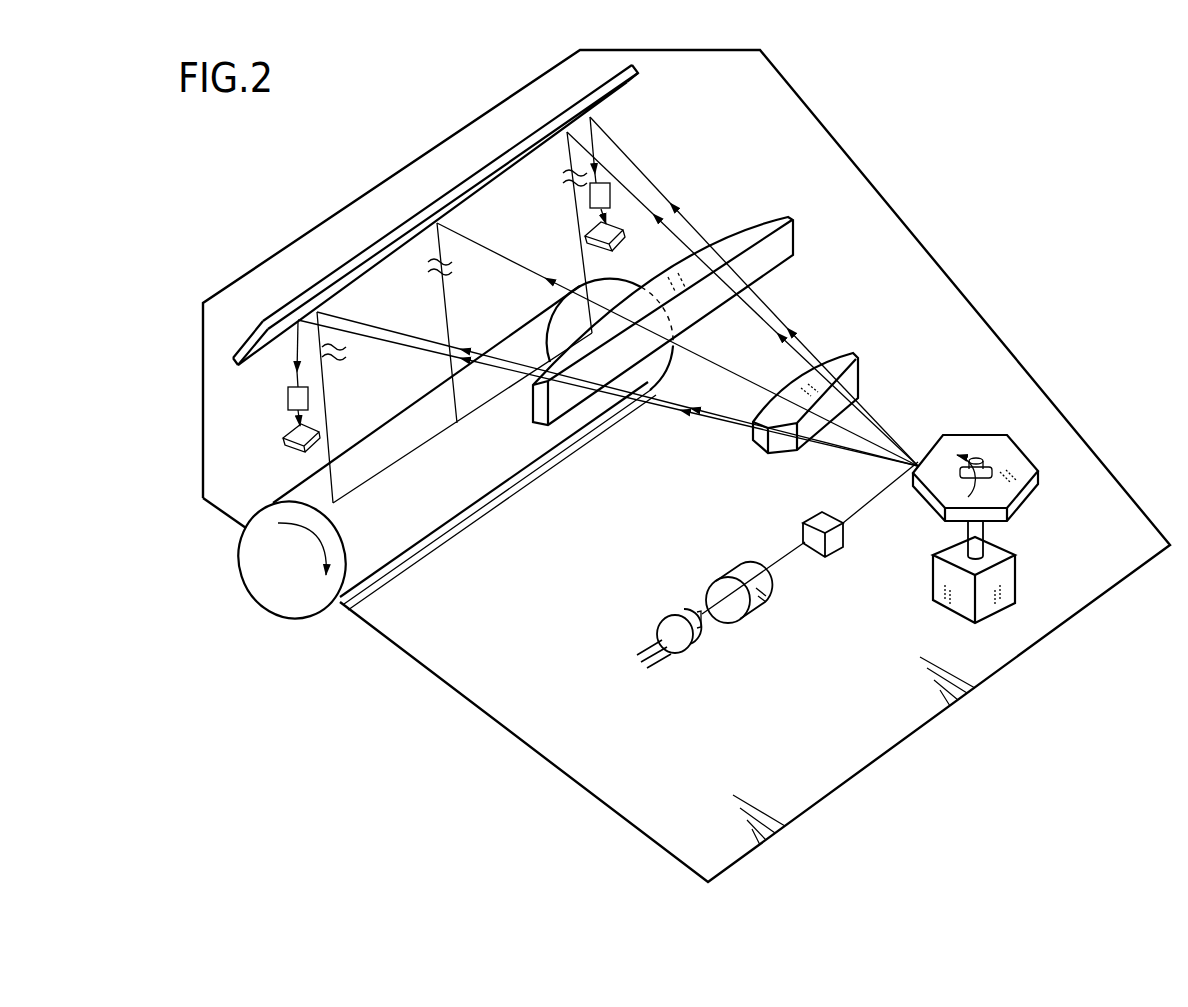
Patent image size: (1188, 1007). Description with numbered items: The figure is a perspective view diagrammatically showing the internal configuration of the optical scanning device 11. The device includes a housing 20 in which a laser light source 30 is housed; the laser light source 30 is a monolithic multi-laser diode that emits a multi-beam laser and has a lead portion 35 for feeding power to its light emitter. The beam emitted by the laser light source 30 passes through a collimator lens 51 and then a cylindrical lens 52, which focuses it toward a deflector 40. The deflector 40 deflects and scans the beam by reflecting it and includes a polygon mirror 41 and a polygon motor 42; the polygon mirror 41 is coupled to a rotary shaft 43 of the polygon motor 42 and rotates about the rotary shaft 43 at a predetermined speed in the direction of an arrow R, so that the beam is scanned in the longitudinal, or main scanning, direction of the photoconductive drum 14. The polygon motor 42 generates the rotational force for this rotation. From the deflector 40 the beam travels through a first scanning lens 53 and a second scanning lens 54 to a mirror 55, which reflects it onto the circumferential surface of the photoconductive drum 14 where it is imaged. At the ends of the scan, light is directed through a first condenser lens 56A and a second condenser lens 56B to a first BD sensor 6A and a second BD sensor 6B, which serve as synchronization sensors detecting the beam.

The optical scanning device 11 is at (1033, 203).
The housing 20 is at (998, 338).
The mirror 55 is at (472, 172).
The photoconductive drum 14 is at (400, 540).
The first condenser lens 56A is at (288, 398).
The first BD sensor 6A is at (283, 435).
The second condenser lens 56B is at (590, 197).
The second BD sensor 6B is at (585, 237).
The second scanning lens 54 is at (793, 243).
The first scanning lens 53 is at (858, 373).
The deflector 40 is at (1098, 503).
The polygon mirror 41 is at (1030, 497).
The rotary shaft 43 is at (983, 537).
The polygon motor 42 is at (1015, 572).
The arrow R is at (940, 505).
The laser light source 30 is at (672, 612).
The lead portion 35 is at (650, 640).
The collimator lens 51 is at (765, 606).
The cylindrical lens 52 is at (833, 550).